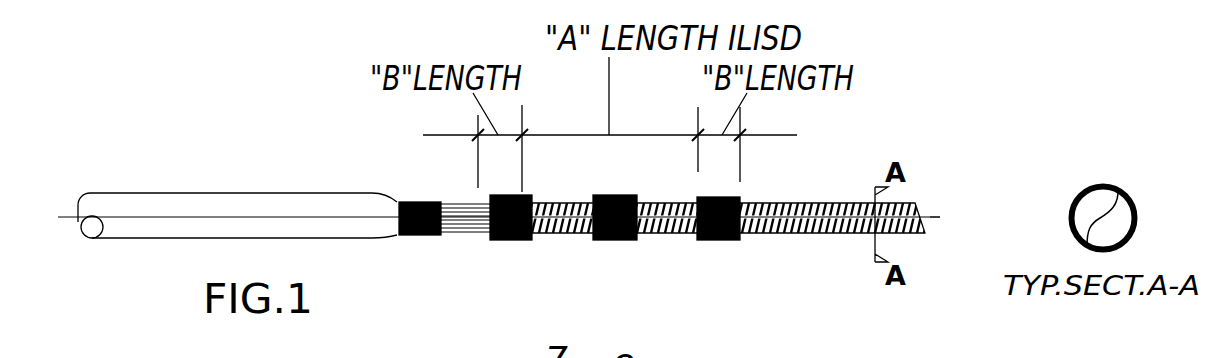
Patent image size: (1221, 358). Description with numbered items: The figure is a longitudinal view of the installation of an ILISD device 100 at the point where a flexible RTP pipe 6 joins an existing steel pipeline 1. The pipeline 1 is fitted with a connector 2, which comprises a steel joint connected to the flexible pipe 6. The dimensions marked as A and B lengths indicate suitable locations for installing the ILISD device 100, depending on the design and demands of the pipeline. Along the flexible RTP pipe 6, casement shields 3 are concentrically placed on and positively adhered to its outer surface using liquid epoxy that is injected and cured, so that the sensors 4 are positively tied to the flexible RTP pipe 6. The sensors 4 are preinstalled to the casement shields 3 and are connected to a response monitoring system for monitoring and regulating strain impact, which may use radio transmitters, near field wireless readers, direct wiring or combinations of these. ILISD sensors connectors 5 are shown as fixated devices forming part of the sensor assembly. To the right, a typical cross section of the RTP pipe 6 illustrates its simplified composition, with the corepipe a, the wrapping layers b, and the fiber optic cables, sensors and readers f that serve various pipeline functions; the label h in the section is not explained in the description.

The steel pipeline 1 is at (193, 193).
The connector 2 is at (487, 232).
The casement shields 3 is at (505, 238).
The sensors 4 is at (531, 226).
The ILISD sensors connectors 5 is at (541, 228).
The flexible RTP pipe 6 is at (800, 233).
The fiber optic cables, sensors and readers f is at (629, 237).
The ILISD device 100 is at (687, 267).
The hollow core h is at (1123, 198).
The wrapping layers b is at (1133, 217).
The corepipe a is at (1137, 235).